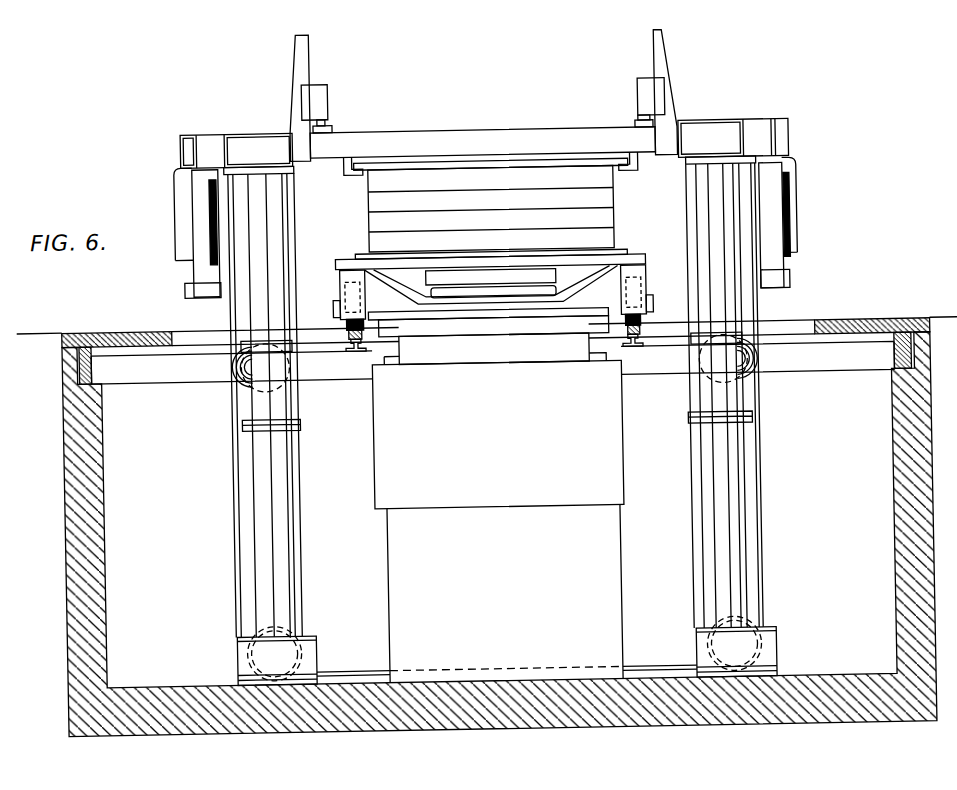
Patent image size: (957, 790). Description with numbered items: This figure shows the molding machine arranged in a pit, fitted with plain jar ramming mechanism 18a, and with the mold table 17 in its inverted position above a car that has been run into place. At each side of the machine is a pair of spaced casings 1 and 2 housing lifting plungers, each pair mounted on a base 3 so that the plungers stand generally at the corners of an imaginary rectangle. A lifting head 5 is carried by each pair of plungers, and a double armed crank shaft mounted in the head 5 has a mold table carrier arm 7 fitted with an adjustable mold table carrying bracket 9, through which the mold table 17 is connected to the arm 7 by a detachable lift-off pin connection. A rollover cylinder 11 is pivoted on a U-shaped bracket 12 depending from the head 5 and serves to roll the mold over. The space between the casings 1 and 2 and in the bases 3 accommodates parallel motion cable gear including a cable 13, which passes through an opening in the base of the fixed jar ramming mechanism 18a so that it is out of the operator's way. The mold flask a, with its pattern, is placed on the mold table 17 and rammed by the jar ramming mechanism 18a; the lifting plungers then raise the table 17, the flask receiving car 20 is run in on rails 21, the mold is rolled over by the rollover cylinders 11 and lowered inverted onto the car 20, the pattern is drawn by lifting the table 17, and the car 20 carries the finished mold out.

The casing 1 is at (702, 477).
The casing 2 is at (293, 494).
The base 3 is at (507, 651).
The lifting head 5 is at (484, 143).
The mold table carrier arm 7 is at (306, 62).
The mold table carrying bracket 9 is at (336, 90).
The rollover cylinder 11 is at (191, 208).
The U-shaped bracket 12 is at (198, 235).
The cable 13 is at (234, 461).
The mold table 17 is at (483, 151).
The plain jar ramming mechanism 18a is at (615, 532).
The flask receiving mechanism 20 is at (640, 261).
The rails 21 is at (359, 346).
The mold flask a is at (492, 205).